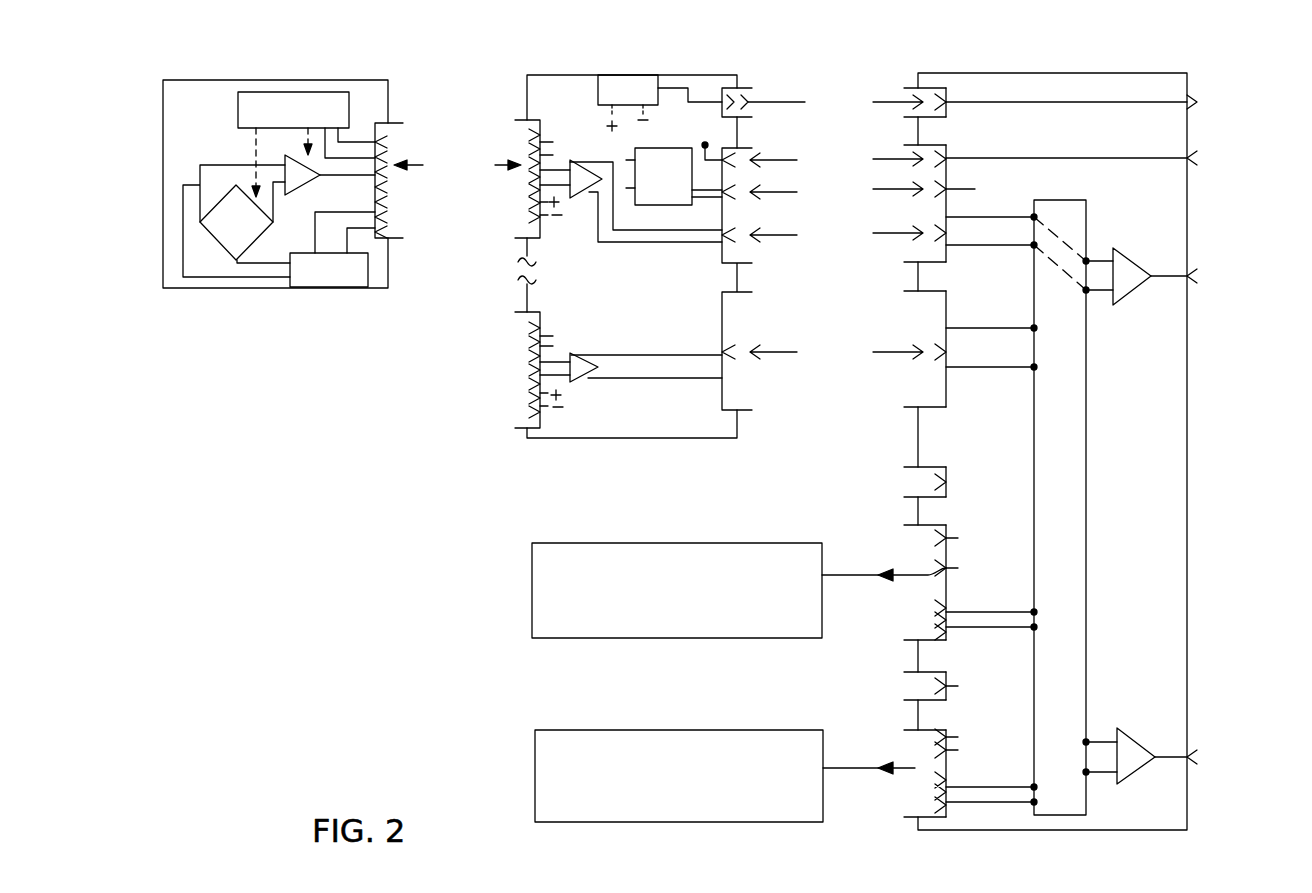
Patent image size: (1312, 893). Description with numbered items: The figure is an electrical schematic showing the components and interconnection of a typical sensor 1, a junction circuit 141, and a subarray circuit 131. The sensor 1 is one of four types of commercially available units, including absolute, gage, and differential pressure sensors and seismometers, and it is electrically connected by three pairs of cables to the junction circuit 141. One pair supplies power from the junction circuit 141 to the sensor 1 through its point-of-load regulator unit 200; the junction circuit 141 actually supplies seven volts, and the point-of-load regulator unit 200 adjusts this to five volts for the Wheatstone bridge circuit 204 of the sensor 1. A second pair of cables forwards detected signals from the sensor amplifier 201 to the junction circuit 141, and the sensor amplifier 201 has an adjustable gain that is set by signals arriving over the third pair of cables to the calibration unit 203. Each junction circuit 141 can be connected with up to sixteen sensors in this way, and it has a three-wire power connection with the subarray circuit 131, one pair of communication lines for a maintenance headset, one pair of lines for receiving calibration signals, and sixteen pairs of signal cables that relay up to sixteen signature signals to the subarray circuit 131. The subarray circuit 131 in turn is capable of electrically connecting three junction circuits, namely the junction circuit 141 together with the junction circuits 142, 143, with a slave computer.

The sensor 1 is at (342, 179).
The junction circuit 141 is at (679, 249).
The junction circuit 142 is at (677, 590).
The junction circuit 143 is at (679, 776).
The subarray circuit 131 is at (1049, 433).
The point-of-load regulator unit 200 is at (338, 288).
The sensor amplifier 201 is at (297, 191).
The calibration unit 203 is at (245, 129).
The Wheatstone bridge circuit 204 is at (236, 222).